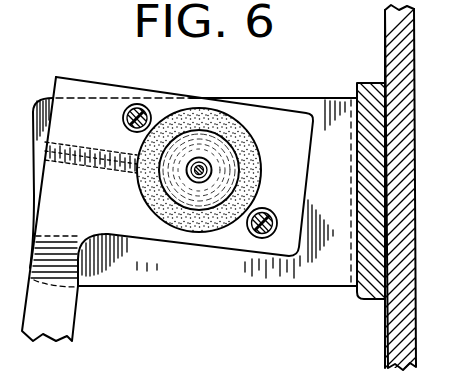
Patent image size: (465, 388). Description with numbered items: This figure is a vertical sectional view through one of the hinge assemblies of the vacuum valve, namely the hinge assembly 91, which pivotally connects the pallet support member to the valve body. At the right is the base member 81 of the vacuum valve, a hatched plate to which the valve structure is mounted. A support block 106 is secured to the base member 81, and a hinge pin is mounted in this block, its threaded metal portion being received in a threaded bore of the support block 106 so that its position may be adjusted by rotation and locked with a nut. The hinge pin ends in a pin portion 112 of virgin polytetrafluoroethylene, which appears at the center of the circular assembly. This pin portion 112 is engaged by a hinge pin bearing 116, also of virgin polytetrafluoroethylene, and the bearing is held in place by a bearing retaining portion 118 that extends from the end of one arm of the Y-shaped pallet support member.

The base member 81 is at (402, 339).
The hinge assembly 91 is at (168, 180).
The support block 106 is at (208, 270).
The pin portion 112 is at (202, 166).
The hinge pin bearing 116 is at (261, 163).
The bearing retaining portion 118 is at (283, 125).